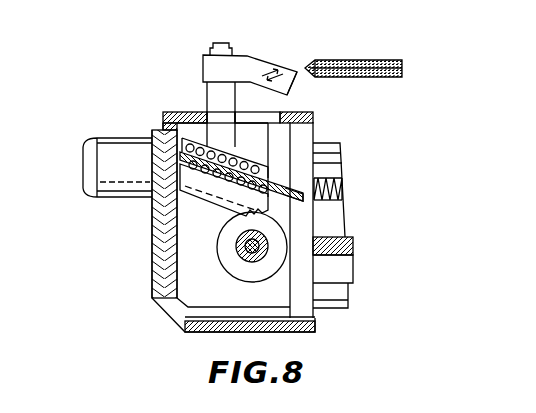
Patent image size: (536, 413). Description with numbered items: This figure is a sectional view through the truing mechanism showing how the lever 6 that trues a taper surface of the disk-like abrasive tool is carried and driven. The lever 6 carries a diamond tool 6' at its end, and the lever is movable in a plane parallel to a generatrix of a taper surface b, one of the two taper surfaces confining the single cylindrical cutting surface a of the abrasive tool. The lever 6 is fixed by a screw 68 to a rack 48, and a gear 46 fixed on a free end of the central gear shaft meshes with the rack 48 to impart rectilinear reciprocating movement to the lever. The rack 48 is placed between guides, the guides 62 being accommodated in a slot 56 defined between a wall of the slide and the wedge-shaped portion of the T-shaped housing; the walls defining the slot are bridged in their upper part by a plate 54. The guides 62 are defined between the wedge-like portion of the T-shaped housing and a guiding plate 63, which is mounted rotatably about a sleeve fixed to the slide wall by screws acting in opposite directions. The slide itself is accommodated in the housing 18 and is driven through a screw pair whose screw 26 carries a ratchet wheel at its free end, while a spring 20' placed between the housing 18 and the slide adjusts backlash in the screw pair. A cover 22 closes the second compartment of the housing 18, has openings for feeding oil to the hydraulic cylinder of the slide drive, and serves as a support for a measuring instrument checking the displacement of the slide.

The lever 6 is at (250, 87).
The diamond tool 6' is at (284, 61).
The housing 18 is at (340, 294).
The spring 20' is at (348, 183).
The cover 22 is at (153, 250).
The screw 26 is at (343, 248).
The gear 46 is at (243, 270).
The rack 48 is at (218, 190).
The plate 54 is at (173, 112).
The slot 56 is at (183, 277).
The guides 62 is at (225, 156).
The guiding plate 63 is at (292, 187).
The screw 68 is at (224, 44).
The cylindrical cutting surface a is at (311, 63).
The taper surface b is at (318, 59).